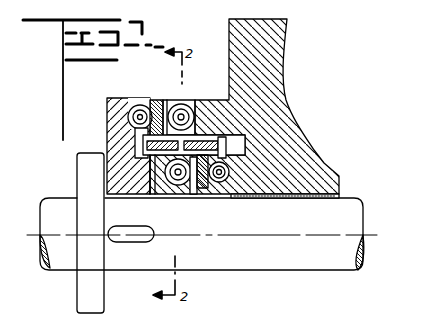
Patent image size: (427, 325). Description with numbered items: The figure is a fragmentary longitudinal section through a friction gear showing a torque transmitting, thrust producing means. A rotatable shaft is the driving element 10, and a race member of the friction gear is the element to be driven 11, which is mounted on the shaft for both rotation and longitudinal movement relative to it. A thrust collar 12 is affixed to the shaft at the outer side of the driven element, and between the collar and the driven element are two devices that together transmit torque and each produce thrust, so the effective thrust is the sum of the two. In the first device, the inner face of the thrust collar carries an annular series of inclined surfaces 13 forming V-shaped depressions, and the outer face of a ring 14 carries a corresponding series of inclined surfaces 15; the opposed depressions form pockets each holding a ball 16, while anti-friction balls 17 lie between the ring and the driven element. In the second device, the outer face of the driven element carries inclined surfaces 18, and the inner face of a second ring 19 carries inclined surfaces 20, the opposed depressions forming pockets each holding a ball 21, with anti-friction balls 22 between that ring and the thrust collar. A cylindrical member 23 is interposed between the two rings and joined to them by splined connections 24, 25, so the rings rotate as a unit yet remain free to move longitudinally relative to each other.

The driving element 10 is at (317, 268).
The element to be driven 11 is at (295, 92).
The thrust collar 12 is at (111, 149).
The inclined surfaces 13 is at (168, 185).
The ring 14 is at (203, 190).
The inclined surfaces 15 is at (191, 192).
The ball 16 is at (151, 186).
The anti-friction balls 17 is at (215, 193).
The inclined surfaces 18 is at (196, 108).
The ring 19 is at (157, 100).
The inclined surfaces 20 is at (174, 100).
The ball 21 is at (186, 104).
The anti-friction balls 22 is at (142, 105).
The cylindrical member 23 is at (212, 137).
The splined connection 24 is at (231, 143).
The splined connection 25 is at (146, 134).